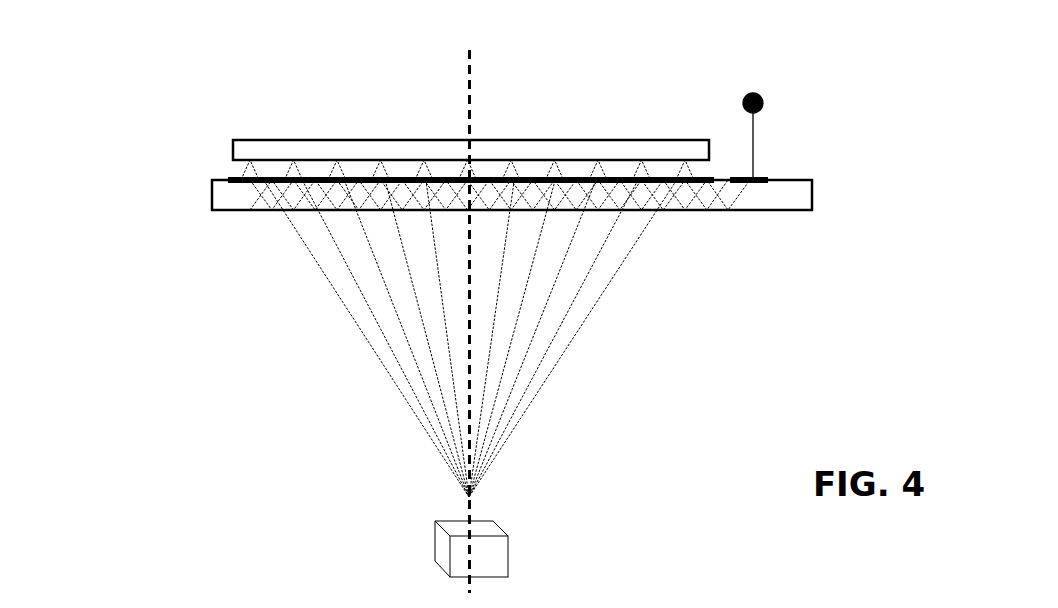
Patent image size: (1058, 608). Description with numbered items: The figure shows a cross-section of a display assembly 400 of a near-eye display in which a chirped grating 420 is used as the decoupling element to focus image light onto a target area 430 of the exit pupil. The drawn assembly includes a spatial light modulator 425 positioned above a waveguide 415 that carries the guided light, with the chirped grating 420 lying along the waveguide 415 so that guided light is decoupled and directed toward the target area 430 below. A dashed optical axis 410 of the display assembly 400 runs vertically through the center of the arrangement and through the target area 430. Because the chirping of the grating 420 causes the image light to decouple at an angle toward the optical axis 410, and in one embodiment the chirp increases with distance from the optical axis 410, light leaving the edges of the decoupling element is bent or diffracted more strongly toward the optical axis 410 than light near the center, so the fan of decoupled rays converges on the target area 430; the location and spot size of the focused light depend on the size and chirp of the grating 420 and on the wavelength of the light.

The display assembly 400 is at (329, 104).
The spatial light modulator (SLM) 425 is at (622, 139).
The chirped grating 420 is at (229, 180).
The waveguide 415 is at (767, 200).
The optical axis 410 is at (472, 512).
The target area 430 is at (428, 548).